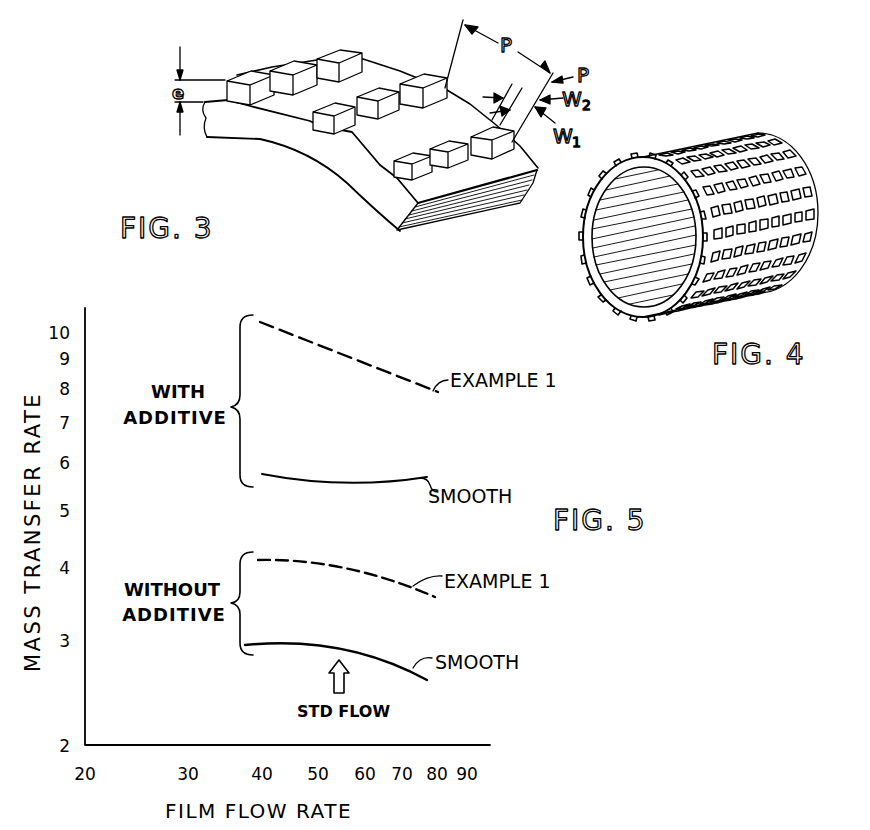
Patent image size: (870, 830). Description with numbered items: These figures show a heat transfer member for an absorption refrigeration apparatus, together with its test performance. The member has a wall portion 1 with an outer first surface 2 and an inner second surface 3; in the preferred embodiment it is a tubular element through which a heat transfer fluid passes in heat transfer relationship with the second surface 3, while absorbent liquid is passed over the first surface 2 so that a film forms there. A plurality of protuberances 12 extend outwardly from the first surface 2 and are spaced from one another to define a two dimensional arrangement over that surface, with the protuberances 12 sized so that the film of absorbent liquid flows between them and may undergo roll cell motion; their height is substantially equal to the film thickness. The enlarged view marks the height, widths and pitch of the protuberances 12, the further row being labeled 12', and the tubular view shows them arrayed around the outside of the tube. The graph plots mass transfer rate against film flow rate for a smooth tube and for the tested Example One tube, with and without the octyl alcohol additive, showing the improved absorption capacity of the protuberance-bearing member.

In FIG. 3, the wall portion 1 is at (471, 206).
In FIG. 4, the wall portion 1 is at (638, 310).
In FIG. 3, the first surface 2 is at (370, 150).
In FIG. 4, the first surface 2 is at (773, 150).
In FIG. 3, the second surface 3 is at (383, 215).
In FIG. 4, the second surface 3 is at (614, 286).
In FIG. 3, the protuberances 12 is at (370, 126).
In FIG. 4, the protuberances 12 is at (746, 224).
In FIG. 3, the protrusions (second row) 12' is at (316, 59).